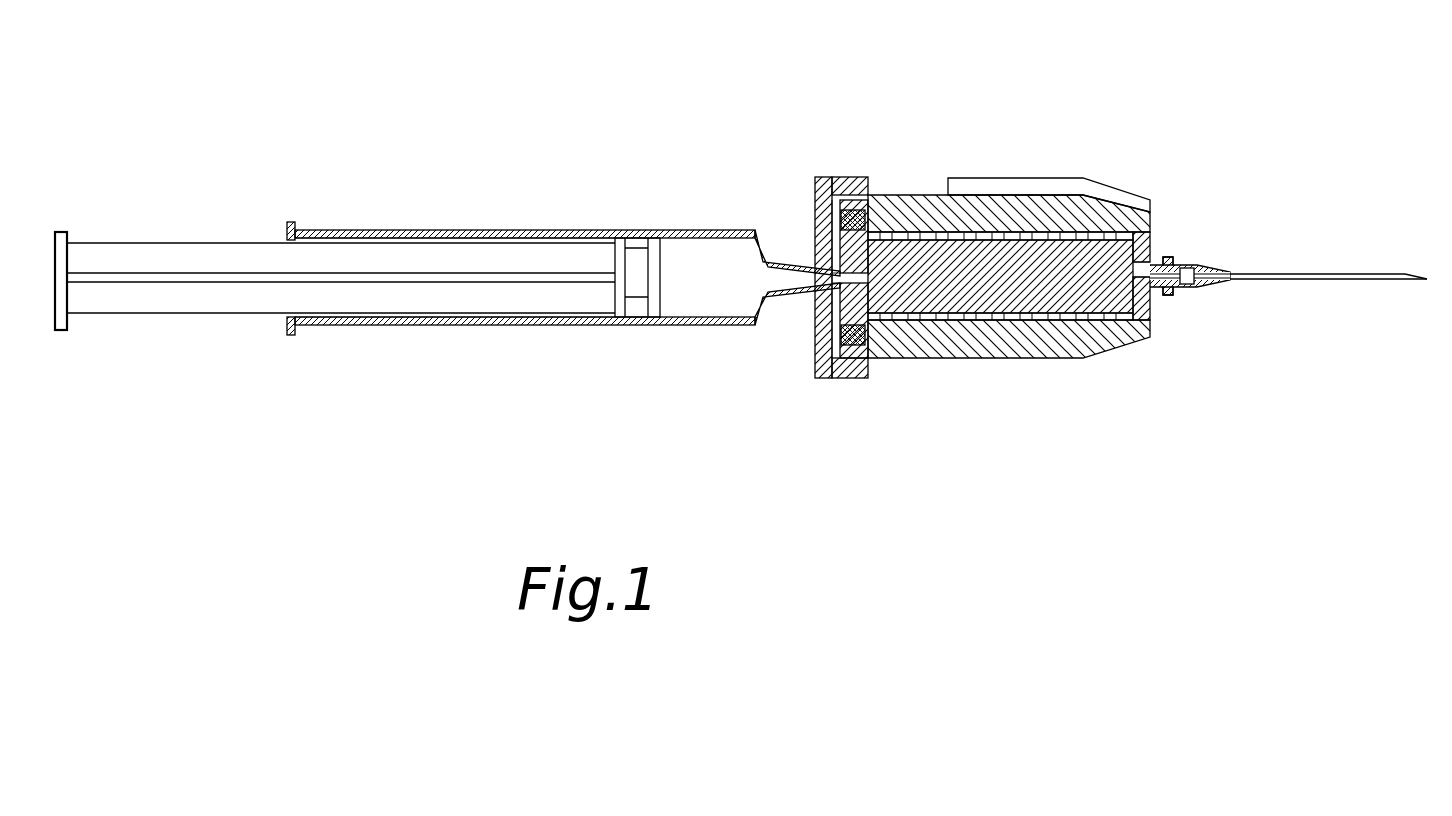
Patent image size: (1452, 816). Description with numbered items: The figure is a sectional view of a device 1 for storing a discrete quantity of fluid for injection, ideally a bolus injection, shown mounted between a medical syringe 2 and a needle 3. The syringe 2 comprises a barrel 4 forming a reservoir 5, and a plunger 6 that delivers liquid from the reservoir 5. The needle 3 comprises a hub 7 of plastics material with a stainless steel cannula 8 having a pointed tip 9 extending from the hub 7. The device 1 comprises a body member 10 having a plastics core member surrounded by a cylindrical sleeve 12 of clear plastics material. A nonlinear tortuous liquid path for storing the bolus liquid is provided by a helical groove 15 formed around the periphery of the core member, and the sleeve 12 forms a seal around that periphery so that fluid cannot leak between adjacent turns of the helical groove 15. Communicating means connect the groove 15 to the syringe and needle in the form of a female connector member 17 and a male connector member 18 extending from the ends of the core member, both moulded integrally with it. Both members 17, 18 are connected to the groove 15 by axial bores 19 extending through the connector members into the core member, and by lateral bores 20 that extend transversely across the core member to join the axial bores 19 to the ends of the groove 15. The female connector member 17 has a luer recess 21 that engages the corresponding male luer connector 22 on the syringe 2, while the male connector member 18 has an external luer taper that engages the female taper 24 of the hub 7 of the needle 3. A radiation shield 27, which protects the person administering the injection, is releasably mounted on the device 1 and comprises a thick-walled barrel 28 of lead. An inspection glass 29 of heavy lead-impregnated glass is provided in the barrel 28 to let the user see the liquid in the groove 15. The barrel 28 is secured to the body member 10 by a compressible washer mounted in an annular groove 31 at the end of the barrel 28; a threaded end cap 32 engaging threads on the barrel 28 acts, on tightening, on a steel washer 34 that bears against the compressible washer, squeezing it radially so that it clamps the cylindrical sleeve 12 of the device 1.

The device 1 is at (950, 115).
The medical syringe 2 is at (447, 213).
The needle 3 is at (1272, 274).
The barrel 4 is at (480, 327).
The reservoir 5 is at (690, 248).
The plunger 6 is at (222, 262).
The hub 7 is at (1192, 262).
The cannula 8 is at (1340, 280).
The pointed tip 9 is at (1428, 275).
The body member 10 is at (1055, 265).
The cylindrical sleeve 12 is at (1030, 243).
The helical groove 15 is at (988, 238).
The female connector member 17 is at (810, 262).
The male connector member 18 is at (1157, 297).
The axial bores 19 is at (832, 317).
The lateral bores 20 is at (1148, 243).
The luer recess 21 is at (805, 292).
The male luer connector 22 is at (773, 262).
The female taper 24 is at (1200, 290).
The radiation shield 27 is at (1054, 388).
The thick-walled barrel 28 is at (1022, 358).
The inspection glass 29 is at (1105, 192).
The annular groove 31 is at (853, 212).
The threaded end cap 32 is at (833, 368).
The steel washer 34 is at (820, 215).